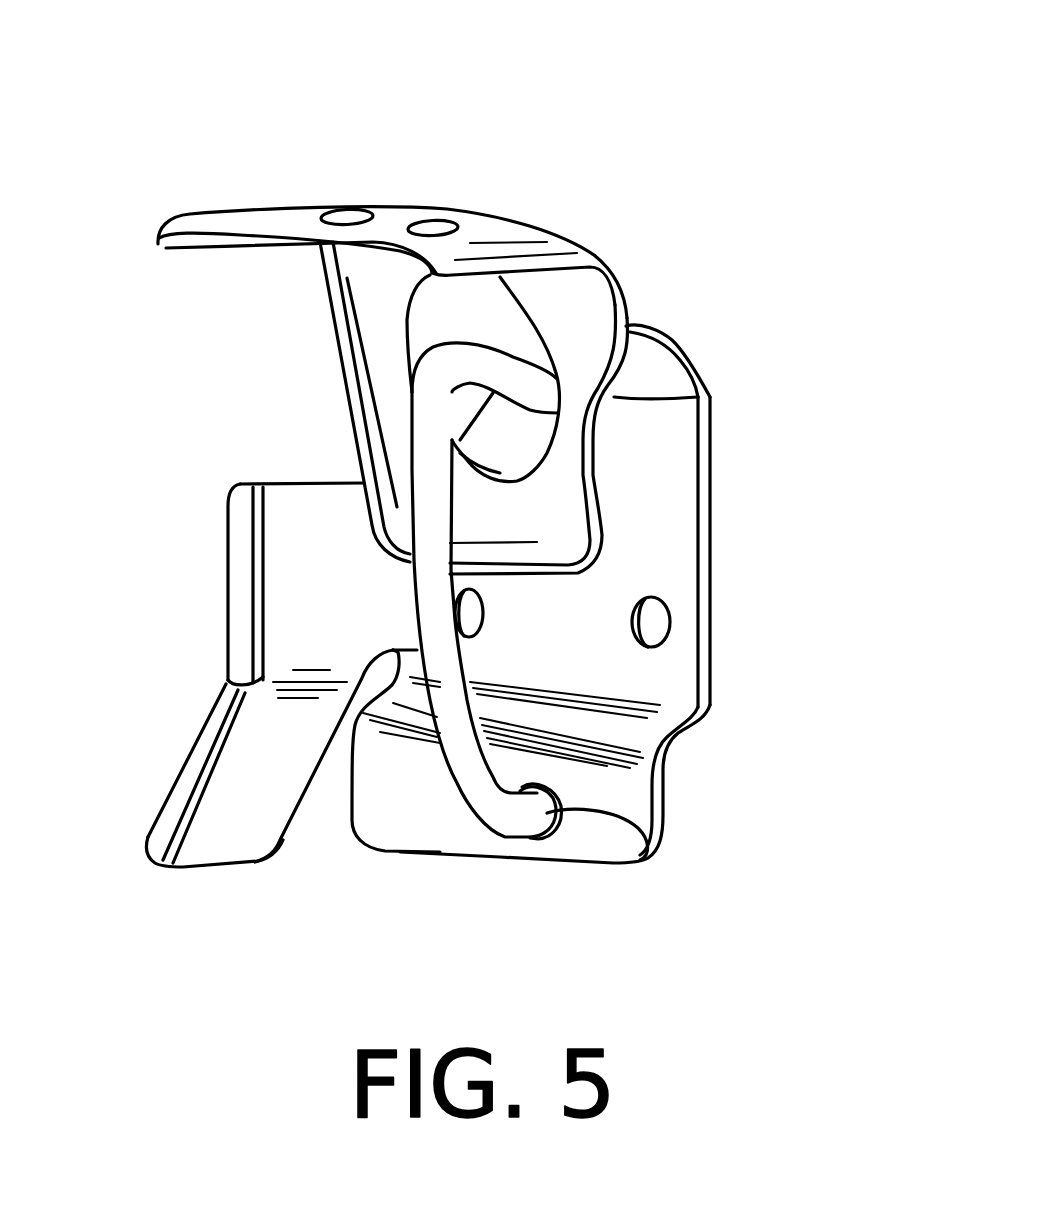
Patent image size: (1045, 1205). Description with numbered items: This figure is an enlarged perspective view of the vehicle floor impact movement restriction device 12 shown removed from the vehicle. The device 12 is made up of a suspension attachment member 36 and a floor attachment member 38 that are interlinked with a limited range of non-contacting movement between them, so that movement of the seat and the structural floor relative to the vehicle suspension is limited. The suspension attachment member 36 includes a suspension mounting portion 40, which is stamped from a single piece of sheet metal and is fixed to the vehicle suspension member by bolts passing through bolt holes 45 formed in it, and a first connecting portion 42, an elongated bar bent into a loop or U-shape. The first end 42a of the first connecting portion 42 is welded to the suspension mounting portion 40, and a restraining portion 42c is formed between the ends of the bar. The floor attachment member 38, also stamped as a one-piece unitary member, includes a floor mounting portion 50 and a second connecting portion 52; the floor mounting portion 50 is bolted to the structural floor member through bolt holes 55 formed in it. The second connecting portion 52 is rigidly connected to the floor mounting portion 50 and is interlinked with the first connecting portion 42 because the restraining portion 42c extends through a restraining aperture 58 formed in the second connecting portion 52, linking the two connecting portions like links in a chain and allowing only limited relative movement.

The vehicle floor impact movement restriction device 12 is at (617, 200).
The suspension attachment member 36 is at (740, 517).
The floor attachment member 38 is at (285, 203).
The suspension mounting portion 40 is at (703, 688).
The first connecting portion 42 is at (502, 862).
The first end 42a is at (650, 838).
The restraining portion 42c is at (528, 390).
The bolt holes 45 is at (653, 617).
The floor mounting portion 50 is at (483, 237).
The second connecting portion 52 is at (706, 393).
The flange holes 55 is at (447, 224).
The restraining aperture 58 is at (415, 294).